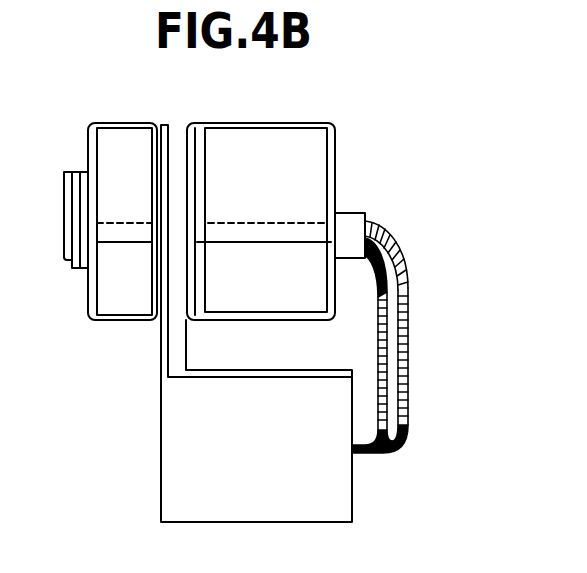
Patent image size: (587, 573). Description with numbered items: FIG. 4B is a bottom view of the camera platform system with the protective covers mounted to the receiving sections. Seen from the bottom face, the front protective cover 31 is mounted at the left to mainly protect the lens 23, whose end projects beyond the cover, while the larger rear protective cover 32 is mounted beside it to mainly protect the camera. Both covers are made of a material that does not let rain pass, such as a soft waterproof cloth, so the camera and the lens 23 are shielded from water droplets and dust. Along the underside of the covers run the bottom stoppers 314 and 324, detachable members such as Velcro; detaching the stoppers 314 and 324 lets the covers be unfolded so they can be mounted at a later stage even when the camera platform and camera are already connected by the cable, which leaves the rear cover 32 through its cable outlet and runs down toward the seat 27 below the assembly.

The front protective cover 31 is at (122, 122).
The rear protective cover 32 is at (268, 122).
The bottom stopper 314 is at (111, 233).
The bottom stopper 324 is at (315, 233).
The lens 23 is at (72, 272).
The seat 27 is at (173, 441).